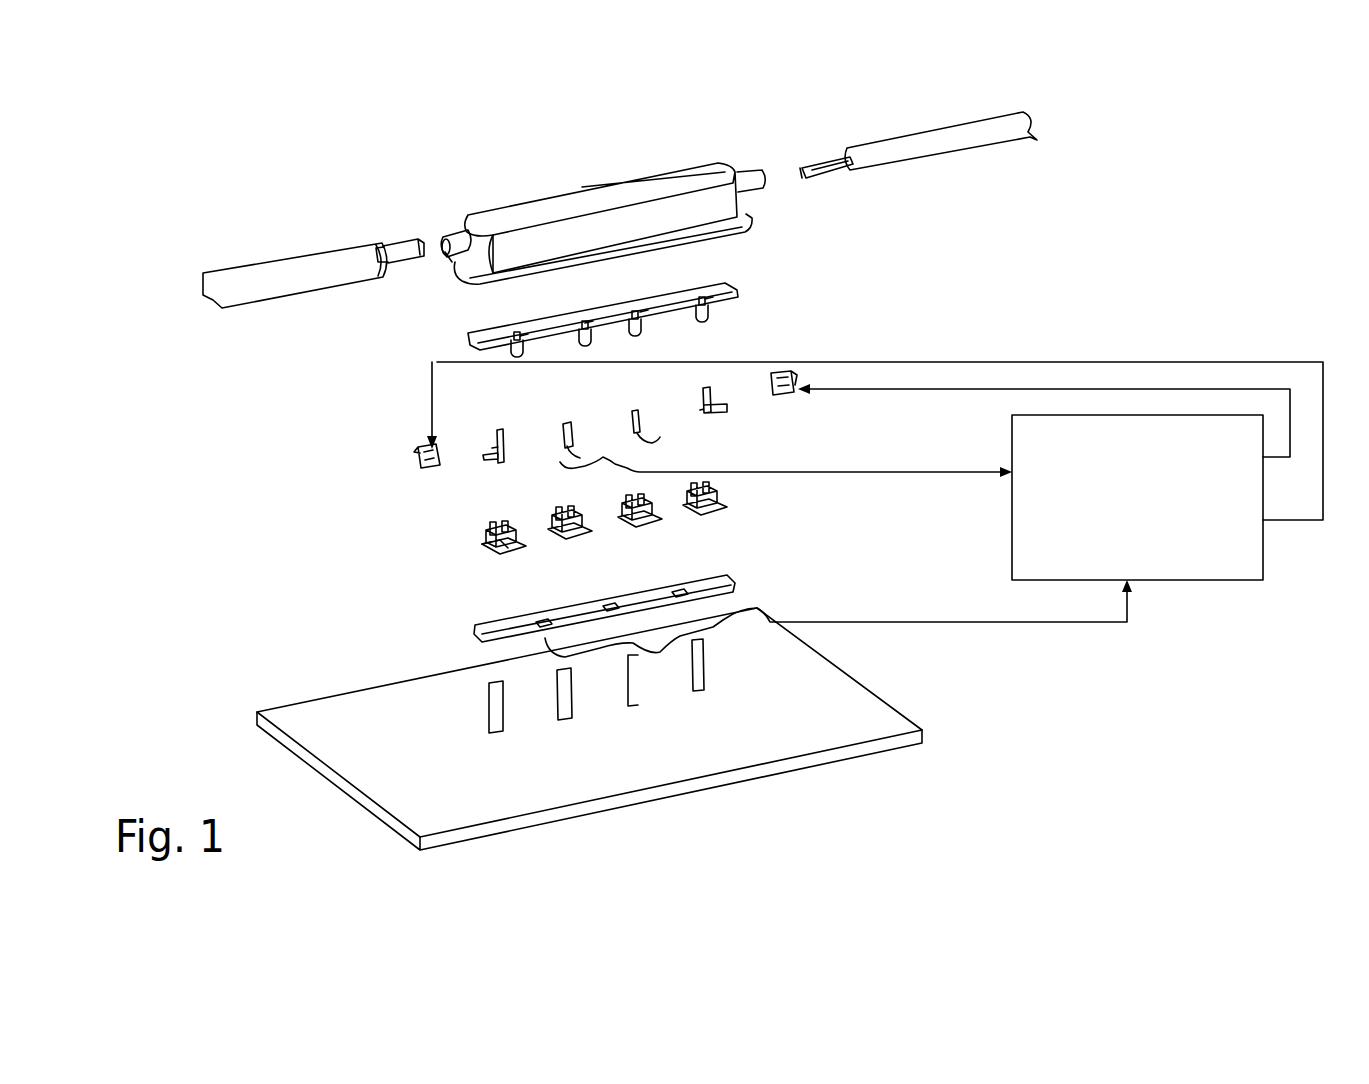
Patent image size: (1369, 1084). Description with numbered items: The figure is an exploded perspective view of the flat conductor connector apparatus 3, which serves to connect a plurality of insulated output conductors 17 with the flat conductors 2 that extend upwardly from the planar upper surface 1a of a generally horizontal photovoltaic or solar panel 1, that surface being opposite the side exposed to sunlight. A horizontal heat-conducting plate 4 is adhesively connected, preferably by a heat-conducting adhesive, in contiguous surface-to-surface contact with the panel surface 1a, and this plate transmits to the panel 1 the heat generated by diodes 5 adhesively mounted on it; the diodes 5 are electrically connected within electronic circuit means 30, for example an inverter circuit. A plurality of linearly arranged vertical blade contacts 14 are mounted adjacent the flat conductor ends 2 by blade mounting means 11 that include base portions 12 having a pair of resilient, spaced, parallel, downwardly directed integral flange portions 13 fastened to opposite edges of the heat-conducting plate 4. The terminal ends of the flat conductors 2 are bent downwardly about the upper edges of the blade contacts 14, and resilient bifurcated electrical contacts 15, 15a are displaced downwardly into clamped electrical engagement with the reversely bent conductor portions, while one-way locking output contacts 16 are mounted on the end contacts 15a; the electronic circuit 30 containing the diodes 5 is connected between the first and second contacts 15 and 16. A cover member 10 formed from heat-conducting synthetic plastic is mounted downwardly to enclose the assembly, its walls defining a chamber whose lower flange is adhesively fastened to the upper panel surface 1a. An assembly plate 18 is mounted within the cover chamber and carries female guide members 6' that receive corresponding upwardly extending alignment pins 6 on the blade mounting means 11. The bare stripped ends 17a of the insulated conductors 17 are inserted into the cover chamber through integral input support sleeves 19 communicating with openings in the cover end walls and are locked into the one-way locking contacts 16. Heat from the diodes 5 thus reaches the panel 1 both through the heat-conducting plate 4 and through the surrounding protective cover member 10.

The photovoltaic panel 1 is at (621, 733).
The planar upper surface 1a is at (833, 723).
The flat conductors 2 is at (697, 692).
The connector apparatus 3 is at (818, 341).
The heat-conducting plate 4 is at (735, 580).
The diodes 5 is at (537, 614).
The alignment pins 6 is at (766, 498).
The female guide members 6' is at (655, 327).
The cover member 10 is at (612, 197).
The blade mounting means 11 is at (488, 538).
The base portions 12 is at (497, 551).
The flange portions 13 is at (494, 548).
The blade contacts 14 is at (461, 554).
The bifurcated electrical contacts 15 is at (574, 433).
The end contacts 15a is at (499, 436).
The one-way locking output contacts 16 is at (421, 450).
The insulated output conductors 17 is at (293, 255).
The bare stripped ends 17a is at (409, 248).
The assembly plate 18 is at (723, 292).
The input support sleeves 19 is at (763, 172).
The electronic circuit means 30 is at (1200, 581).